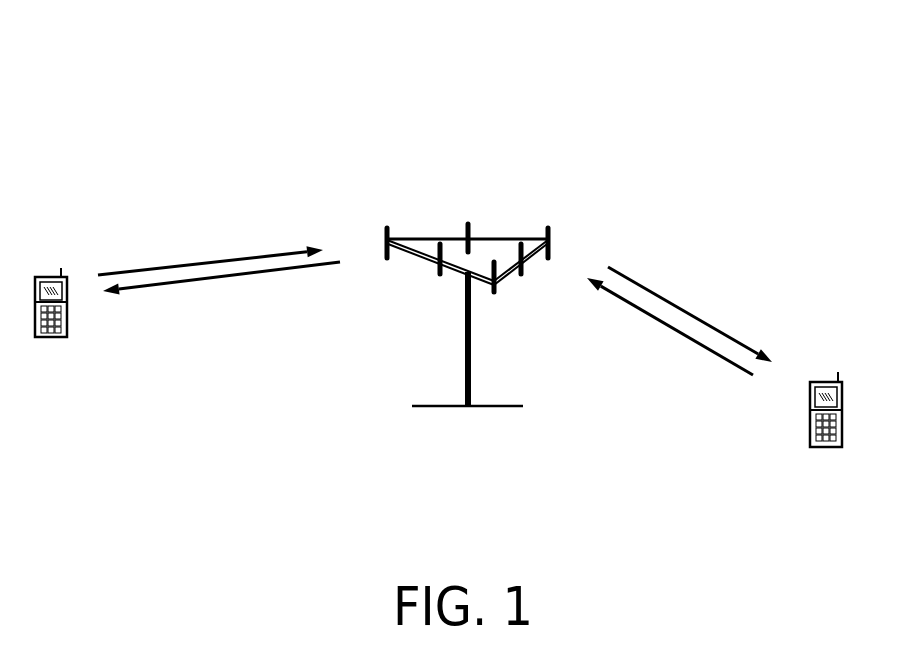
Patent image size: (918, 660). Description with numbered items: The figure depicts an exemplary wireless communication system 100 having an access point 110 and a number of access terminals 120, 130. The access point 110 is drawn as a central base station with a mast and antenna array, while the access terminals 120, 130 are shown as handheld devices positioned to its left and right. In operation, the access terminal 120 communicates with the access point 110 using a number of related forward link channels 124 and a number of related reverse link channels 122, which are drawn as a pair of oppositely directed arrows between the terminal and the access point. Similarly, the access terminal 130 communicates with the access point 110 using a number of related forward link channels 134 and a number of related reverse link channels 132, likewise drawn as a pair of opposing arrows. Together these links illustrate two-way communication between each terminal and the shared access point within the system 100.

The wireless communication system 100 is at (664, 119).
The access point 110 is at (445, 407).
The access terminal 120 is at (47, 277).
The reverse link channels 122 is at (198, 263).
The forward link channels 124 is at (178, 282).
The access terminal 130 is at (818, 382).
The reverse link channels 132 is at (688, 338).
The forward link channels 134 is at (690, 315).